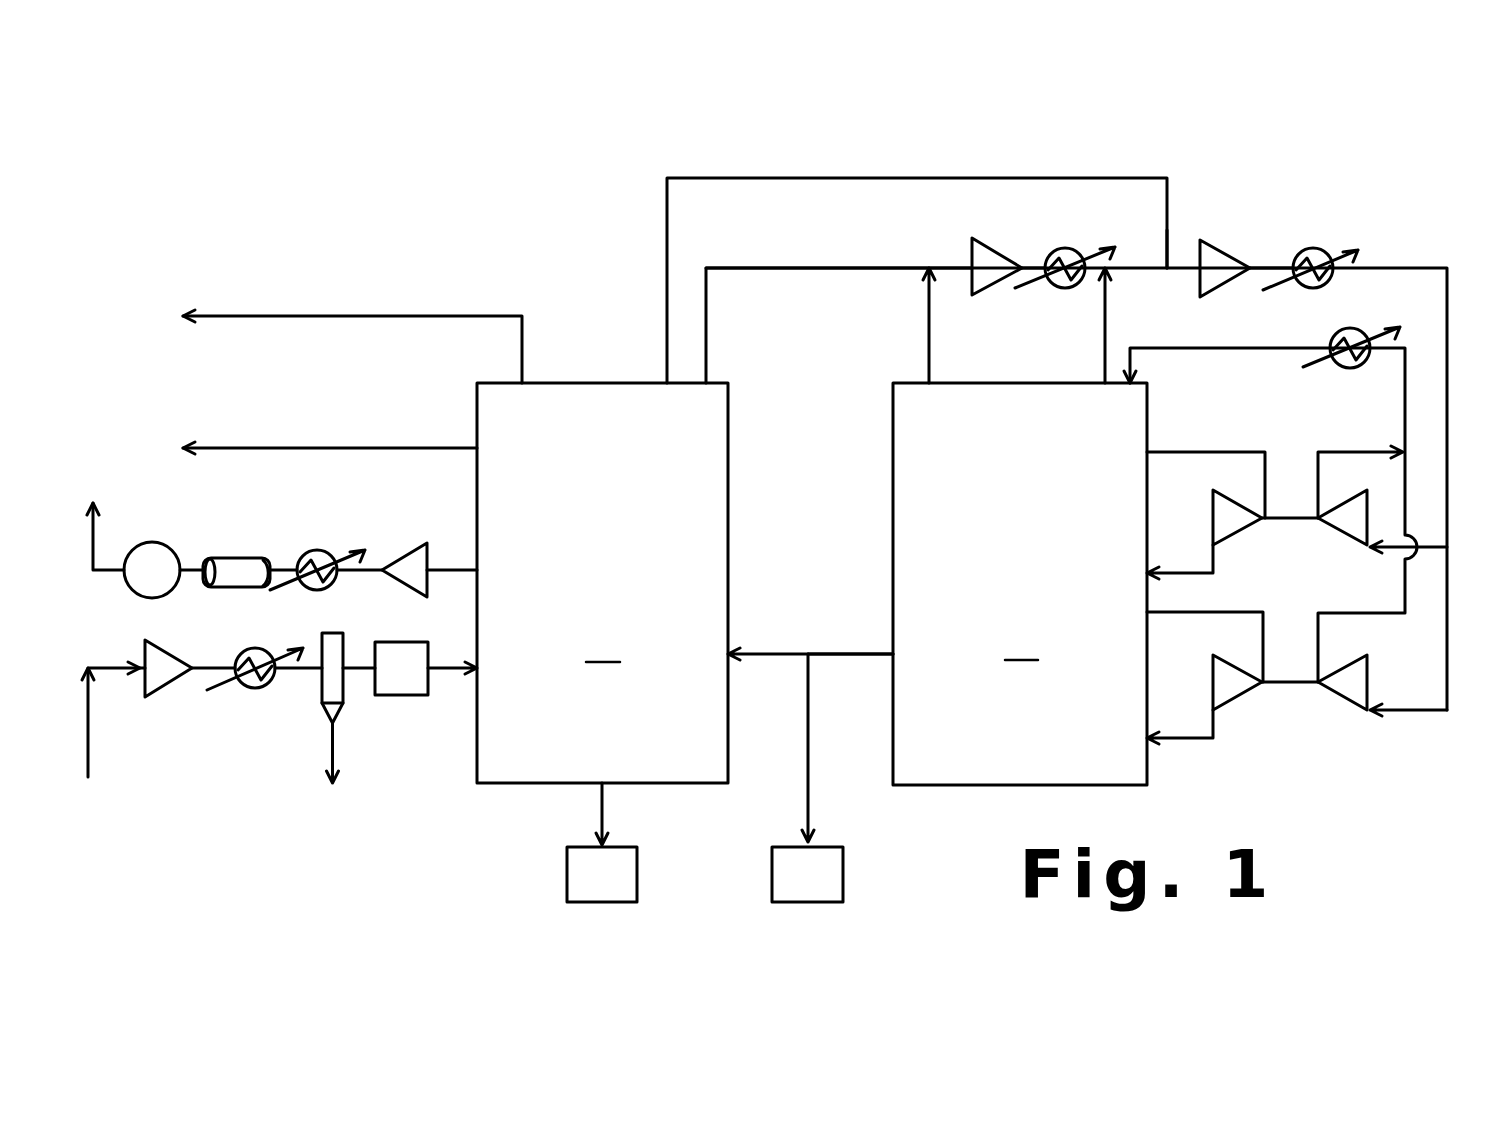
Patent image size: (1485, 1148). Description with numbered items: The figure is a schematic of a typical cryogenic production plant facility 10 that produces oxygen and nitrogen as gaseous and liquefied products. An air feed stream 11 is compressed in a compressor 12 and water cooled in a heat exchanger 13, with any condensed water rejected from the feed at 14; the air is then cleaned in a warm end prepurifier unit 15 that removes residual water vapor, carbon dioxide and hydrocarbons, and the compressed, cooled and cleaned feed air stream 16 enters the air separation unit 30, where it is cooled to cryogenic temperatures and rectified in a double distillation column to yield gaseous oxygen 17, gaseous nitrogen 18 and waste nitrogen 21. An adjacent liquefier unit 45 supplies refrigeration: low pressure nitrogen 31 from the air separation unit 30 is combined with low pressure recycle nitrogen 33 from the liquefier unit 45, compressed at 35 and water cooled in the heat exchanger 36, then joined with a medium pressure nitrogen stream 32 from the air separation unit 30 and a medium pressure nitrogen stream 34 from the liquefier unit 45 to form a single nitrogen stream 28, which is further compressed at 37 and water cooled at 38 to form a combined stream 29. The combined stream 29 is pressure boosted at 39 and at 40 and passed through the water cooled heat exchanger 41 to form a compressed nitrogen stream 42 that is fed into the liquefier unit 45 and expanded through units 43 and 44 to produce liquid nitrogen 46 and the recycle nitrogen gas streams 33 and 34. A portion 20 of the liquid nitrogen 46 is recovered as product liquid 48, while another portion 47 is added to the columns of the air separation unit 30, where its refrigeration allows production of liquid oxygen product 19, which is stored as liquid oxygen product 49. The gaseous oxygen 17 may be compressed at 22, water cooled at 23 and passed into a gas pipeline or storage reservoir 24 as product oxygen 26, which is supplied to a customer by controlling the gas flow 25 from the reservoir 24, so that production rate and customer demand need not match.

The production plant facility 10 is at (562, 173).
The air feed stream 11 is at (113, 672).
The compressor 12 is at (172, 680).
The heat exchanger 13 is at (258, 690).
The condensed water rejection point 14 is at (325, 740).
The warm end prepurifier unit 15 is at (405, 696).
The compressed, cooled, and cleaned feed air stream 16 is at (445, 672).
The gaseous oxygen stream 17 is at (452, 570).
The gaseous nitrogen stream 18 is at (350, 448).
The liquid oxygen product 19 is at (600, 820).
The liquid nitrogen portion 20 is at (807, 707).
The waste nitrogen 21 is at (360, 316).
The oxygen compressor 22 is at (395, 560).
The oxygen water cooler 23 is at (308, 550).
The gas pipeline or storage reservoir 24 is at (258, 557).
The gas flow control 25 is at (178, 538).
The product oxygen 26 is at (92, 569).
The single nitrogen stream 28 is at (1182, 267).
The combined stream 29 is at (955, 265).
The air separation unit 30 is at (602, 583).
The low pressure nitrogen 31 is at (772, 268).
The medium pressure nitrogen stream 32 is at (663, 241).
The low pressure recycle nitrogen 33 is at (929, 357).
The medium pressure nitrogen stream 34 is at (1103, 327).
The low pressure compressor 35 is at (1013, 257).
The heat exchanger 36 is at (1090, 243).
The compressor 37 is at (1220, 245).
The water cooler 38 is at (1313, 252).
The pressure booster 39 is at (1367, 675).
The pressure booster 40 is at (1360, 552).
The water cooled heat exchanger 41 is at (1360, 368).
The compressed nitrogen stream 42 is at (1228, 348).
The expansion unit 43 is at (1250, 521).
The expansion unit 44 is at (1223, 678).
The liquefier unit 45 is at (1020, 584).
The liquid nitrogen 46 is at (828, 622).
The liquid nitrogen portion 47 is at (792, 653).
The liquid nitrogen product 48 is at (800, 902).
The liquid oxygen product 49 is at (583, 902).